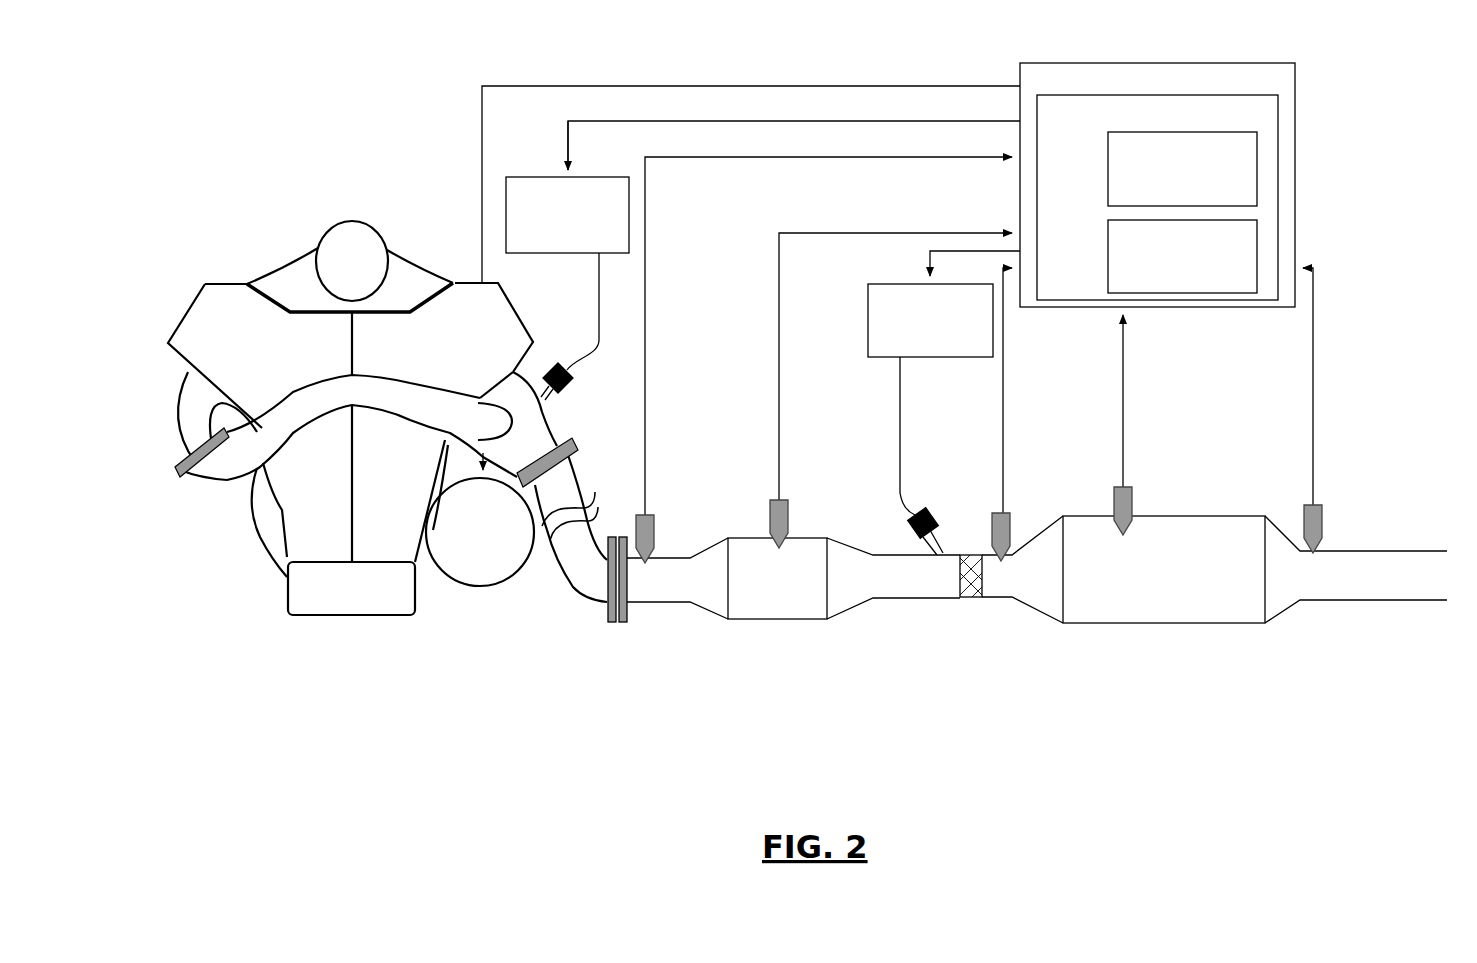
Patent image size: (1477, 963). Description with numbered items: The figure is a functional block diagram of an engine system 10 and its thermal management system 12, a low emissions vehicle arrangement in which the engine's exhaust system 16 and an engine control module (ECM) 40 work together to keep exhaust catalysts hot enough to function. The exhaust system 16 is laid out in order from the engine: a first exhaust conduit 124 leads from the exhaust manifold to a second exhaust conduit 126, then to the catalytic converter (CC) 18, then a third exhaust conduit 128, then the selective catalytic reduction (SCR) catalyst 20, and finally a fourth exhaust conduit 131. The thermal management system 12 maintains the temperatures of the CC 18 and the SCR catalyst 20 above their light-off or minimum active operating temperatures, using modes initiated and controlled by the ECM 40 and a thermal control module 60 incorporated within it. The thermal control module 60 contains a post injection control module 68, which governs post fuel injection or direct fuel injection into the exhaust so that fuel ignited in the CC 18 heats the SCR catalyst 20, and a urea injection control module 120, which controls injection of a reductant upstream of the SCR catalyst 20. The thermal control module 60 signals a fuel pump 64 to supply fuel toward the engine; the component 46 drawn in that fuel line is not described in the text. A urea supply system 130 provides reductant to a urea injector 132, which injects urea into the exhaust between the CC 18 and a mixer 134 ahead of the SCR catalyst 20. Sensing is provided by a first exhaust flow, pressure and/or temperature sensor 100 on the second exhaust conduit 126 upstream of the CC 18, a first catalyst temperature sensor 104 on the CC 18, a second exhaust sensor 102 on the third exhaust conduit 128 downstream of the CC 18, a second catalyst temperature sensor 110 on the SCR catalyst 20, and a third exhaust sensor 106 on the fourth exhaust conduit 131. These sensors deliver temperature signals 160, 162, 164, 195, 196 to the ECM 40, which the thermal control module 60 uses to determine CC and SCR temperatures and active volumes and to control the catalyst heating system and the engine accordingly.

The engine system 10 is at (255, 143).
The thermal management system 12 is at (1378, 149).
The exhaust system 16 is at (596, 695).
The catalytic converter 18 is at (795, 619).
The selective catalytic reduction catalyst 20 is at (1162, 516).
The engine control module 40 is at (1295, 95).
The fuel injector 46 is at (560, 363).
The thermal control module 60 is at (1278, 213).
The fuel pump 64 is at (535, 177).
The post injection control module 68 is at (1108, 176).
The first exhaust flow, pressure and/or temperature sensor 100 is at (640, 515).
The second exhaust flow, pressure and/or temperature sensor 102 is at (995, 513).
The first catalyst temperature sensor 104 is at (786, 500).
The third exhaust flow, pressure and/or temperature sensor 106 is at (1305, 505).
The second catalyst temperature sensor 110 is at (1112, 505).
The urea injection control module 120 is at (1108, 263).
The first exhaust conduit 124 is at (582, 592).
The second exhaust conduit 126 is at (690, 602).
The third exhaust conduit 128 is at (905, 598).
The urea supply system 130 is at (868, 300).
The fourth exhaust conduit 131 is at (1365, 600).
The urea injector 132 is at (910, 520).
The mixer 134 is at (968, 597).
The temperature signal T1 160 is at (645, 300).
The temperature signal T2 162 is at (1003, 330).
The temperature signal T3 164 is at (860, 233).
The temperature signal T4 195 is at (1313, 318).
The temperature signal T5 196 is at (1123, 335).